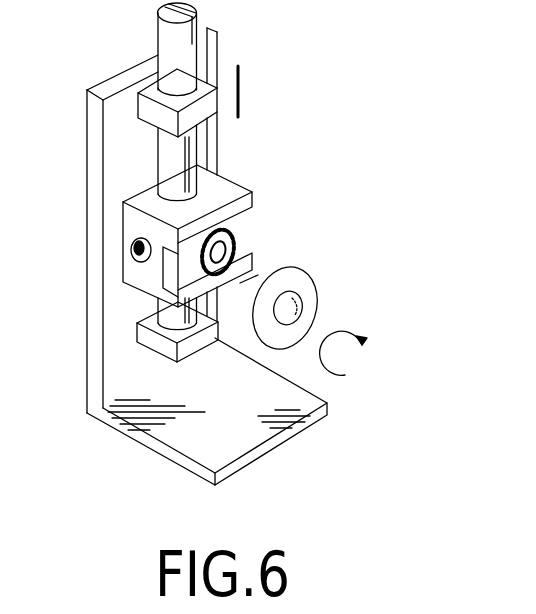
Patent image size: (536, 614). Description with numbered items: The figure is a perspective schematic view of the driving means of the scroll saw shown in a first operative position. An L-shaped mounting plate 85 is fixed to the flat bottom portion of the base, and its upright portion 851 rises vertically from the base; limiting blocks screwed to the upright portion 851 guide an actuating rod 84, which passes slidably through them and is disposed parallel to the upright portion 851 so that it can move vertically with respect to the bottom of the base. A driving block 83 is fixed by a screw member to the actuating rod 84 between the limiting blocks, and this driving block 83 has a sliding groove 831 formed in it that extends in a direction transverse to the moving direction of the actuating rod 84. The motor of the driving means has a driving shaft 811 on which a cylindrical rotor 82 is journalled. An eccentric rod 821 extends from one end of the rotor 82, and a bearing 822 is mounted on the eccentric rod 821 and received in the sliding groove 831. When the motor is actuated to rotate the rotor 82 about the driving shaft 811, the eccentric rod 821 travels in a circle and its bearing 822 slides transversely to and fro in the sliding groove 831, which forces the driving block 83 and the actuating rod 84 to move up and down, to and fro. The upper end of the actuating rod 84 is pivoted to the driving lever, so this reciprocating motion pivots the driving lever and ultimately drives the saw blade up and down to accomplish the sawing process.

The cylindrical rotor 82 is at (343, 310).
The driving shaft 811 is at (327, 305).
The eccentric rod 821 is at (240, 250).
The bearing 822 is at (161, 266).
The driving block 83 is at (187, 215).
The sliding groove 831 is at (248, 218).
The actuating rod 84 is at (157, 39).
The L-shaped mounting plate 85 is at (167, 256).
The upright portion 851 is at (84, 224).